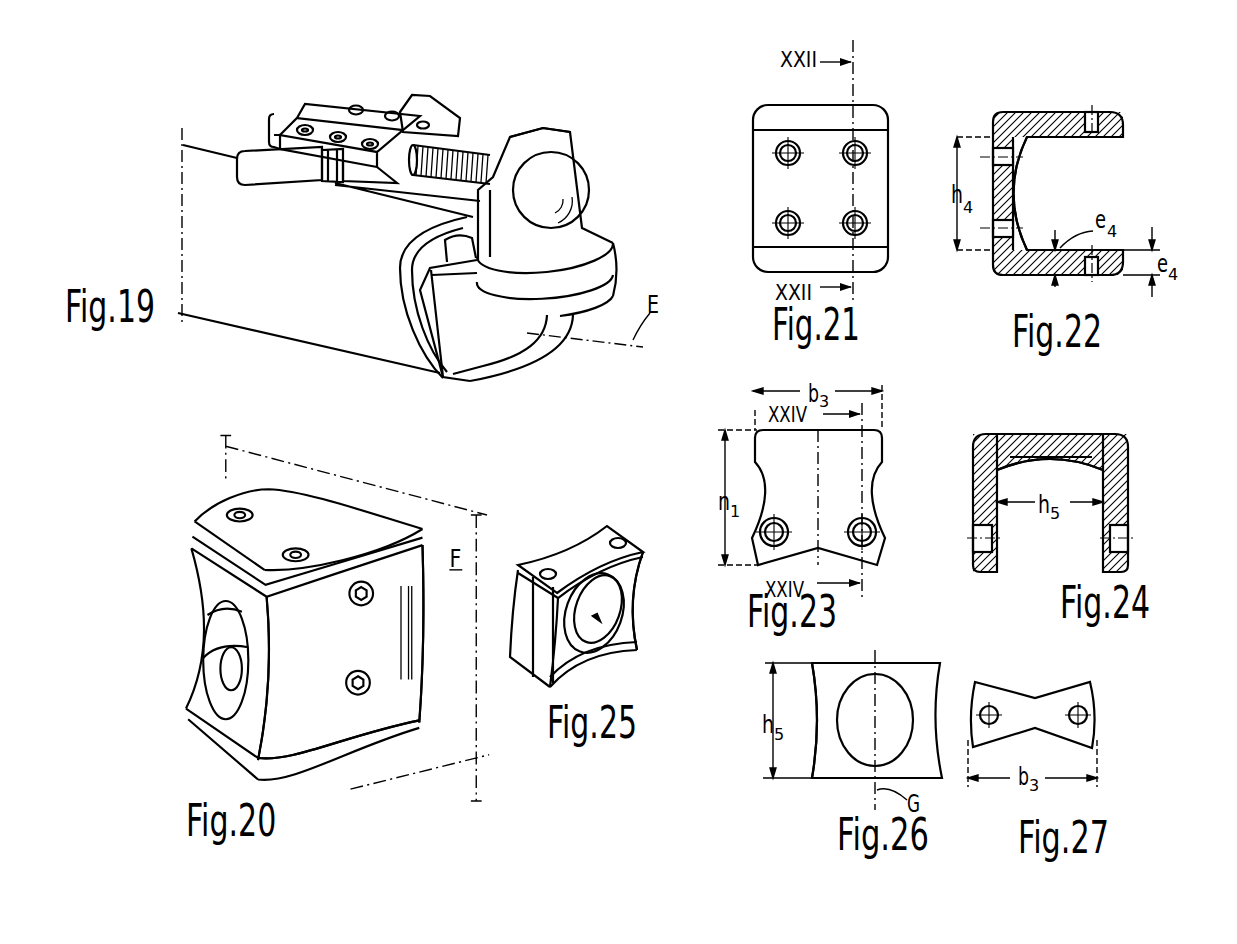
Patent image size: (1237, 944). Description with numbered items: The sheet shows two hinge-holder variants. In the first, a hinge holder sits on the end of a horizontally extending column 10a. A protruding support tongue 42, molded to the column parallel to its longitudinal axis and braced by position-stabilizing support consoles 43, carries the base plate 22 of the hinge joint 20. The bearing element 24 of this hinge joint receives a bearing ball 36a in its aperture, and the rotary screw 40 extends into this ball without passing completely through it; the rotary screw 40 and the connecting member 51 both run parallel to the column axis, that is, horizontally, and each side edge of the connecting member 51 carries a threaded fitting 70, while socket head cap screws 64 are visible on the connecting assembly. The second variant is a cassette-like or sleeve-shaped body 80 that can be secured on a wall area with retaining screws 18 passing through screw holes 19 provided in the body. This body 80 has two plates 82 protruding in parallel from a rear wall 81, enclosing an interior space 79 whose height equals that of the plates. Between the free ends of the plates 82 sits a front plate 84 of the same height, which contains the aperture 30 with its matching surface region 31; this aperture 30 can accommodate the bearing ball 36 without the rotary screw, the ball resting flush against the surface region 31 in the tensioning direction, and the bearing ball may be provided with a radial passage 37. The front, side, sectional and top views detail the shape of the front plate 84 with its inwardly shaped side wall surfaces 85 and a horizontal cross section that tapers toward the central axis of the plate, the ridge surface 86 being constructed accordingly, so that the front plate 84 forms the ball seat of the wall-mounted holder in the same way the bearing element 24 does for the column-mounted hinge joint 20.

In FIG. 19, the horizontal column 10a is at (223, 335).
In FIG. 19, the threaded fitting 70 is at (250, 145).
In FIG. 19, the connecting member 51 is at (348, 95).
In FIG. 19, the socket head cap screw 64 is at (357, 107).
In FIG. 19, the rotary screw 40 is at (481, 144).
In FIG. 19, the hinge joint 20 is at (558, 116).
In FIG. 19, the bearing element 24 is at (576, 139).
In FIG. 19, the bearing ball 36a is at (590, 177).
In FIG. 19, the base plate 22 is at (594, 242).
In FIG. 19, the support tongue 42 is at (601, 288).
In FIG. 19, the support console 43 is at (473, 365).
In FIG. 20, the plate 82 is at (285, 503).
In FIG. 21, the plate 82 is at (877, 118).
In FIG. 22, the plate 82 is at (1113, 120).
In FIG. 23, the plate 82 is at (872, 453).
In FIG. 24, the plate 82 is at (1117, 510).
In FIG. 20, the sleeve-shaped body 80 is at (363, 500).
In FIG. 21, the sleeve-shaped body 80 is at (742, 100).
In FIG. 22, the sleeve-shaped body 80 is at (988, 274).
In FIG. 23, the sleeve-shaped body 80 is at (740, 420).
In FIG. 24, the sleeve-shaped body 80 is at (970, 550).
In FIG. 20, the retaining screw 18 is at (228, 507).
In FIG. 20, the bearing ball 36 is at (212, 617).
In FIG. 20, the surface region 31 is at (210, 600).
In FIG. 20, the aperture 30 is at (190, 630).
In FIG. 25, the aperture 30 is at (597, 640).
In FIG. 26, the aperture 30 is at (910, 700).
In FIG. 20, the radial passage 37 is at (223, 653).
In FIG. 20, the side wall surface 85 is at (295, 668).
In FIG. 25, the side wall surface 85 is at (637, 608).
In FIG. 26, the side wall surface 85 is at (812, 750).
In FIG. 20, the interior space 79 is at (342, 617).
In FIG. 22, the interior space 79 is at (1100, 173).
In FIG. 24, the interior space 79 is at (1047, 527).
In FIG. 20, the rear wall 81 is at (438, 633).
In FIG. 21, the rear wall 81 is at (872, 185).
In FIG. 22, the rear wall 81 is at (1015, 193).
In FIG. 24, the rear wall 81 is at (1013, 440).
In FIG. 20, the front plate 84 is at (287, 707).
In FIG. 25, the front plate 84 is at (585, 520).
In FIG. 26, the front plate 84 is at (913, 660).
In FIG. 27, the front plate 84 is at (1100, 697).
In FIG. 21, the screw hole 19 is at (852, 215).
In FIG. 22, the screw hole 19 is at (1023, 158).
In FIG. 23, the screw hole 19 is at (860, 522).
In FIG. 24, the screw hole 19 is at (1123, 547).
In FIG. 25, the screw hole 19 is at (622, 538).
In FIG. 27, the screw hole 19 is at (995, 710).
In FIG. 27, the ridge surface 86 is at (1062, 720).